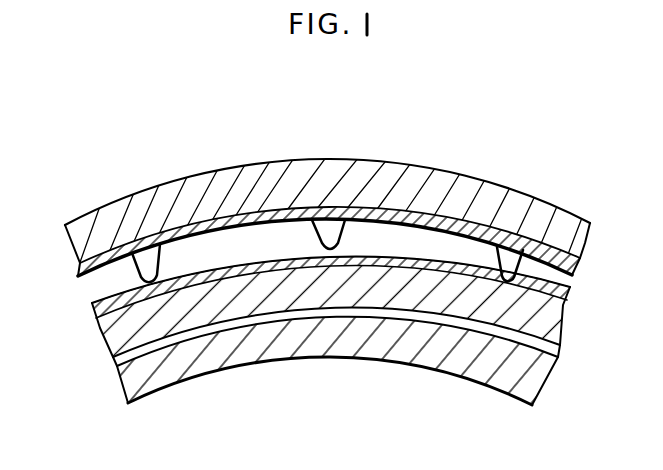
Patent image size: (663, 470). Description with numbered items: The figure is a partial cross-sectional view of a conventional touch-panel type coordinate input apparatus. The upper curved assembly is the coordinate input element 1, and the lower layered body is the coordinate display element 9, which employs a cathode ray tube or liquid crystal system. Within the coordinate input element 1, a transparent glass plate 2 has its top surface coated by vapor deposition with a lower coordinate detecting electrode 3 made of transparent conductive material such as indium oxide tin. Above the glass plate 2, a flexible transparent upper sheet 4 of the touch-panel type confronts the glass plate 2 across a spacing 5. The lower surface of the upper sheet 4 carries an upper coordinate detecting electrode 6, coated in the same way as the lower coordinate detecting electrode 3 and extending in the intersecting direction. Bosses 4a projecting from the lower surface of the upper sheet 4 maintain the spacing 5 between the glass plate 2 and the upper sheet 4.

The coordinate input element 1 is at (99, 367).
The transparent glass plate 2 is at (425, 300).
The lower coordinate detecting electrode 3 is at (373, 266).
The transparent upper sheet 4 is at (400, 162).
The boss 4a is at (316, 231).
The spacing 5 is at (552, 285).
The upper coordinate detecting electrode 6 is at (432, 212).
The coordinate display element 9 is at (470, 362).